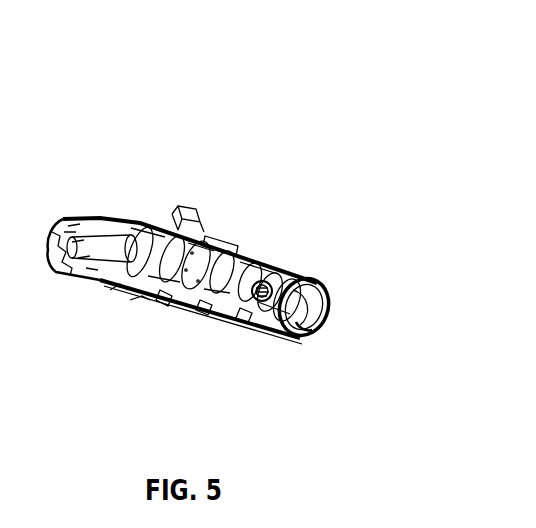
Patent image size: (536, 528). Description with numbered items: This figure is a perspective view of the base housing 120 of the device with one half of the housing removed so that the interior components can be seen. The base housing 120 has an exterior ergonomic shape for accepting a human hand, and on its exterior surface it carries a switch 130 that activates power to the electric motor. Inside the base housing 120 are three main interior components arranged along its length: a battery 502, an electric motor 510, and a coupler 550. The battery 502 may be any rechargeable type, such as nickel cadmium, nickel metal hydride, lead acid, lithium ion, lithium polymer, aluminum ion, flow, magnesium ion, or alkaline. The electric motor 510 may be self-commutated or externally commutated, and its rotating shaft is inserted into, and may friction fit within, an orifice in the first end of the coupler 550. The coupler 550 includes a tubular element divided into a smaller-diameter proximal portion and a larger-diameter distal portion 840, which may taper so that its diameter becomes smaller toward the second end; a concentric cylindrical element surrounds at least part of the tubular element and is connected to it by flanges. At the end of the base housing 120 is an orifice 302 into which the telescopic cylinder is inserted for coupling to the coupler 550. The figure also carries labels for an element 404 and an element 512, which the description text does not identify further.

The base housing 120 is at (107, 183).
The switch 130 is at (187, 208).
The rib 512 is at (238, 212).
The distal portion 840 is at (262, 255).
The end cap 404 is at (320, 285).
The battery 502 is at (97, 242).
The electric motor 510 is at (153, 253).
The coupler 550 is at (208, 308).
The orifice 302 is at (312, 330).